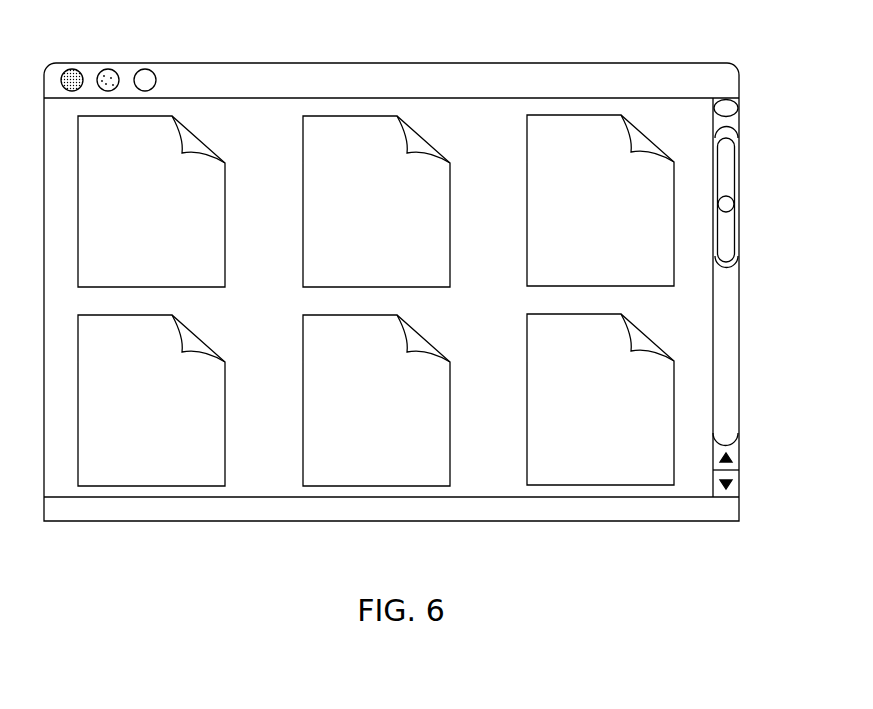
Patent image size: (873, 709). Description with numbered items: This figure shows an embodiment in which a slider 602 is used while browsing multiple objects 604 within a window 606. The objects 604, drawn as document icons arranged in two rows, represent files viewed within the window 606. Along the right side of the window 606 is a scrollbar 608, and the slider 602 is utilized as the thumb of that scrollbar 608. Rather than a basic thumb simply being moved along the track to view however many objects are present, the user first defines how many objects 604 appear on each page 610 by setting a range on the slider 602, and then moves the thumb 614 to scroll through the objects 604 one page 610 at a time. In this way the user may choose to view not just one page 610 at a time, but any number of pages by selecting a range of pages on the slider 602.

The slider 602 is at (764, 297).
The objects 604 is at (573, 449).
The window 606 is at (365, 81).
The scrollbar 608 is at (724, 416).
The page 610 is at (481, 129).
The thumb 614 is at (739, 207).